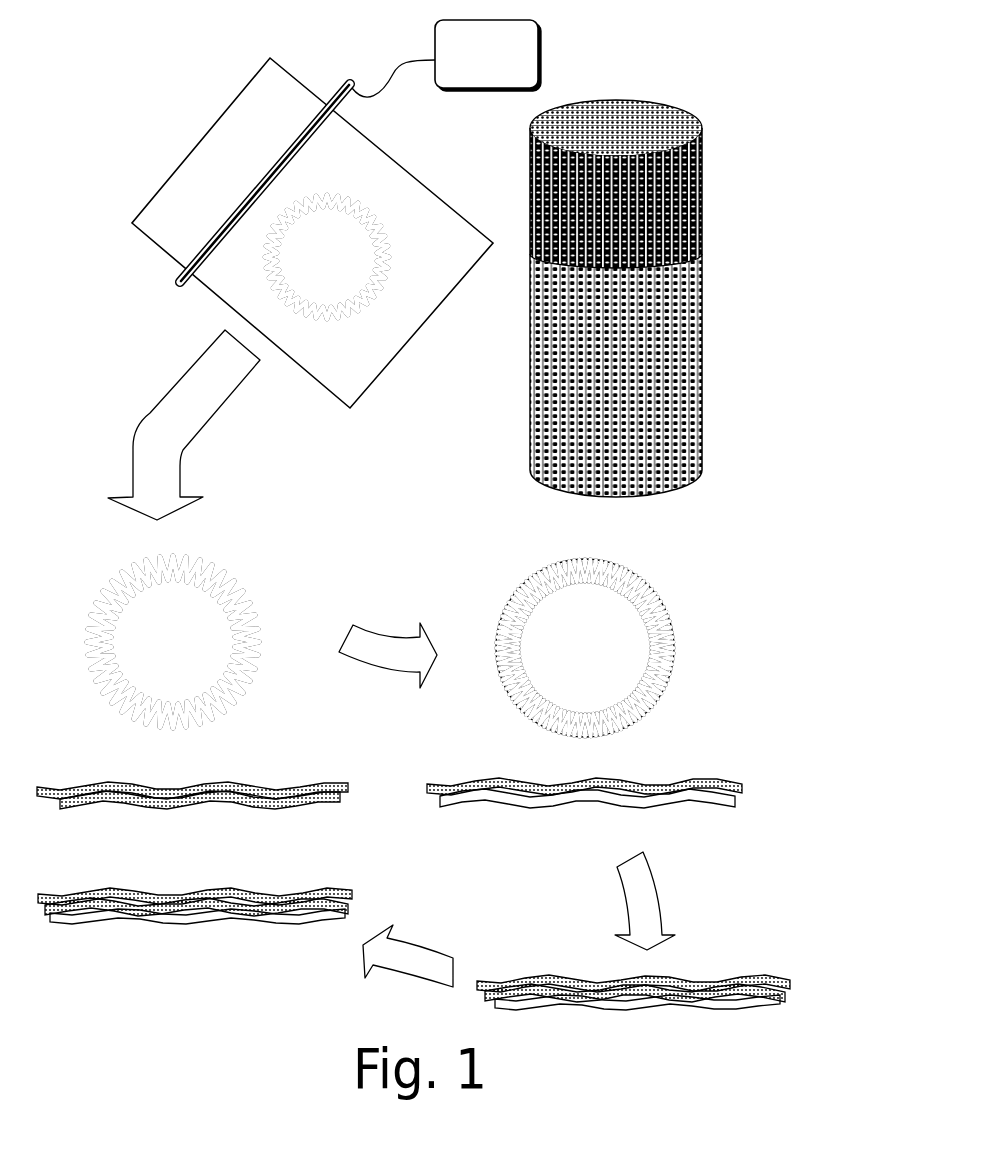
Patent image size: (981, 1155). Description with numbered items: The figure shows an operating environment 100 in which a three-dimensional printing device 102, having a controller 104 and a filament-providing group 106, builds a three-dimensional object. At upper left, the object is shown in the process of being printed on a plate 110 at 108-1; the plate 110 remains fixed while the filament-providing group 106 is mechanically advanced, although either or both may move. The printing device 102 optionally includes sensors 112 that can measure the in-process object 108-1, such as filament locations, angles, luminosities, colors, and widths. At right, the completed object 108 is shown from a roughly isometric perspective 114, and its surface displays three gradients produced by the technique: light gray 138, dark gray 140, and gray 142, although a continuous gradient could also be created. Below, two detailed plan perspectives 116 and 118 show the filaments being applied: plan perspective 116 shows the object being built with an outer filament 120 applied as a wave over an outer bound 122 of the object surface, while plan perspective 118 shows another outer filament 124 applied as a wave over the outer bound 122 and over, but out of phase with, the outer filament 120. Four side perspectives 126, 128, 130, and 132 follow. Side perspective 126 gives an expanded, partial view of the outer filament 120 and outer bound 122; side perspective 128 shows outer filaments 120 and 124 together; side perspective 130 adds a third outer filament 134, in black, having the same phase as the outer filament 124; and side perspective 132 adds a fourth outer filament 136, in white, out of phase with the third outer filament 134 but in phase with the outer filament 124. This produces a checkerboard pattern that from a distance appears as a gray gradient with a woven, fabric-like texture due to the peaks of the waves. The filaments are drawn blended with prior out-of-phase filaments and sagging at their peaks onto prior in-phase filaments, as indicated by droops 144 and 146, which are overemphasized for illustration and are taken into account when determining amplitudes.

The operating environment 100 is at (123, 52).
The 3D printing device 102 is at (133, 245).
The controller 104 is at (503, 73).
The filament-providing group 106 is at (180, 284).
The 3D object 108 is at (520, 461).
The 3D object in process of being printed 108-1 is at (359, 335).
The plate 110 is at (272, 72).
The sensors 112 is at (395, 130).
The isometric perspective 114 is at (705, 96).
The detailed plan perspective 116 is at (123, 556).
The detailed plan perspective 118 is at (510, 556).
The outer filament 120 is at (240, 583).
The outer bound 122 is at (247, 610).
The outer filament 124 is at (646, 592).
The side perspective 126 is at (145, 827).
The side perspective 128 is at (572, 827).
The side perspective 130 is at (712, 956).
The side perspective 132 is at (140, 947).
The third outer filament 134 is at (593, 993).
The fourth outer filament 136 is at (212, 912).
The light gray gradient 138 is at (725, 309).
The dark gray gradient 140 is at (725, 193).
The gray gradient 142 is at (725, 421).
The droop 144 is at (440, 808).
The droop 146 is at (316, 905).